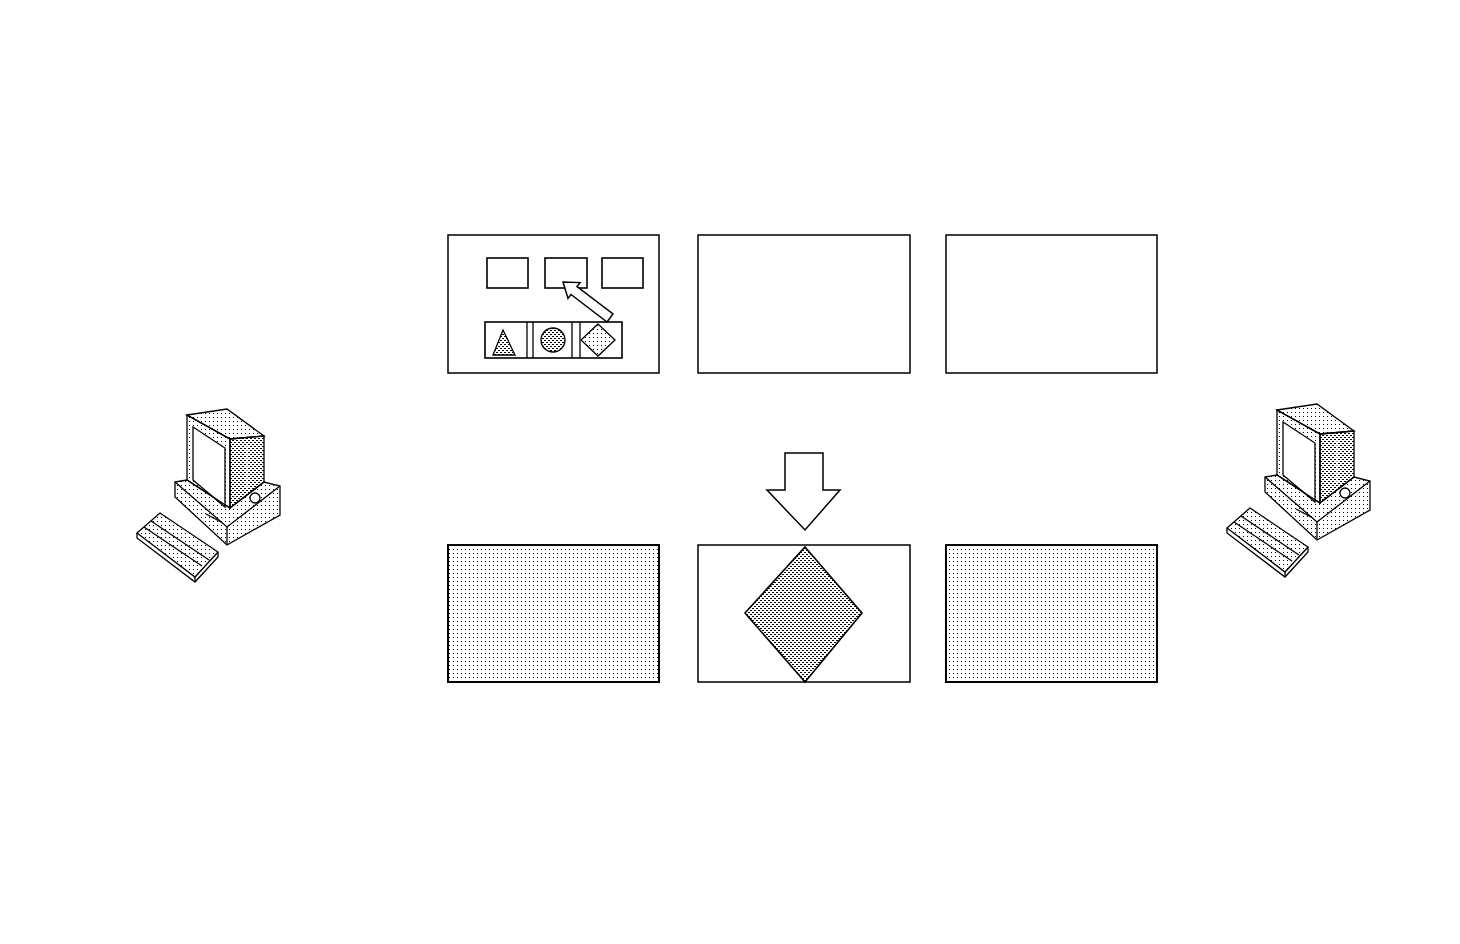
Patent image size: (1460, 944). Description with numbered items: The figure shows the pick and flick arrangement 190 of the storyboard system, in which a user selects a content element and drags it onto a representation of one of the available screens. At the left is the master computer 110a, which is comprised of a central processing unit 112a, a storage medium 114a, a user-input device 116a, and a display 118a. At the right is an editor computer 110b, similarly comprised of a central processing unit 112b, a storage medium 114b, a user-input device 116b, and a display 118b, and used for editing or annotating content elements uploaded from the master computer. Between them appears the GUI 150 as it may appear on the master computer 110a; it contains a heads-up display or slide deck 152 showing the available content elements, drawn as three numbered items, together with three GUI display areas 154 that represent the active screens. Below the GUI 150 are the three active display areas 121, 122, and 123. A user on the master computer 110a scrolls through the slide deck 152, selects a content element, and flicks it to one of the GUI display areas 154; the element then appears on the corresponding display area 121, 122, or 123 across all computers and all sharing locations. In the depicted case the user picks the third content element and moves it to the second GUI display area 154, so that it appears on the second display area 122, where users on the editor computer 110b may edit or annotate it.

The multimedia presentation system 190 is at (819, 53).
The GUI 150 is at (427, 212).
The slide deck 152 is at (498, 322).
The GUI display areas 154 is at (655, 236).
The display area 121 is at (640, 678).
The second display area 122 is at (900, 678).
The display area 123 is at (1148, 678).
The master computer 110a is at (264, 440).
The editor computer 110b is at (1310, 477).
The central processing unit 112a is at (247, 443).
The central processing unit 112b is at (1354, 440).
The storage medium 114a is at (282, 489).
The storage medium 114b is at (1352, 487).
The user-input device 116a is at (142, 522).
The user-input device 116b is at (1239, 522).
The display 118a is at (210, 468).
The display 118b is at (1299, 440).